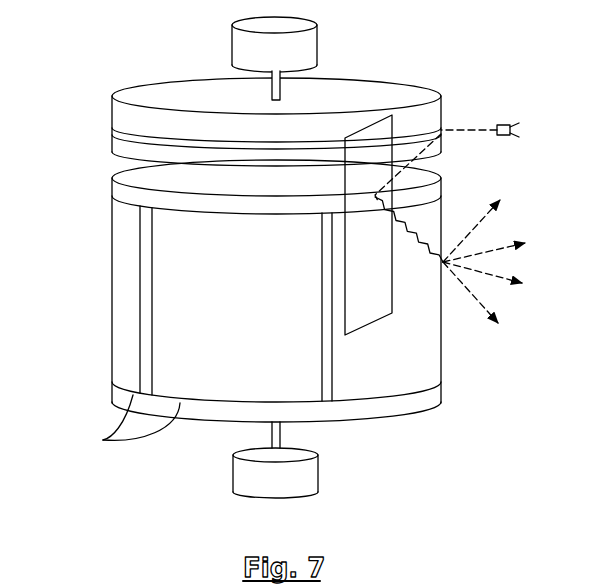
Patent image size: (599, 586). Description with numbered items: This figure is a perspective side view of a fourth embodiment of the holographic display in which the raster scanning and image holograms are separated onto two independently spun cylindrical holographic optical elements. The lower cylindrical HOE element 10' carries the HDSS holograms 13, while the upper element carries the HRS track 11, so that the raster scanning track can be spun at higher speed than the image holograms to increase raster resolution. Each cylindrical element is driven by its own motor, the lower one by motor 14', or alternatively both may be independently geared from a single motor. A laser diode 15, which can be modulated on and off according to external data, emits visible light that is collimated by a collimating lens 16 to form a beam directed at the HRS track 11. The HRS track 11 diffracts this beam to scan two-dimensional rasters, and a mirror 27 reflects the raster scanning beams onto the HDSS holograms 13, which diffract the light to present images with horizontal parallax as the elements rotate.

The cylindrical HOE element 10' is at (235, 281).
The HRS track 11 is at (112, 129).
The HDSS holograms 13 is at (103, 440).
The motor 14' is at (325, 477).
The laser diode 15 is at (503, 125).
The collimating lens 16 is at (498, 125).
The mirror 27 is at (385, 83).